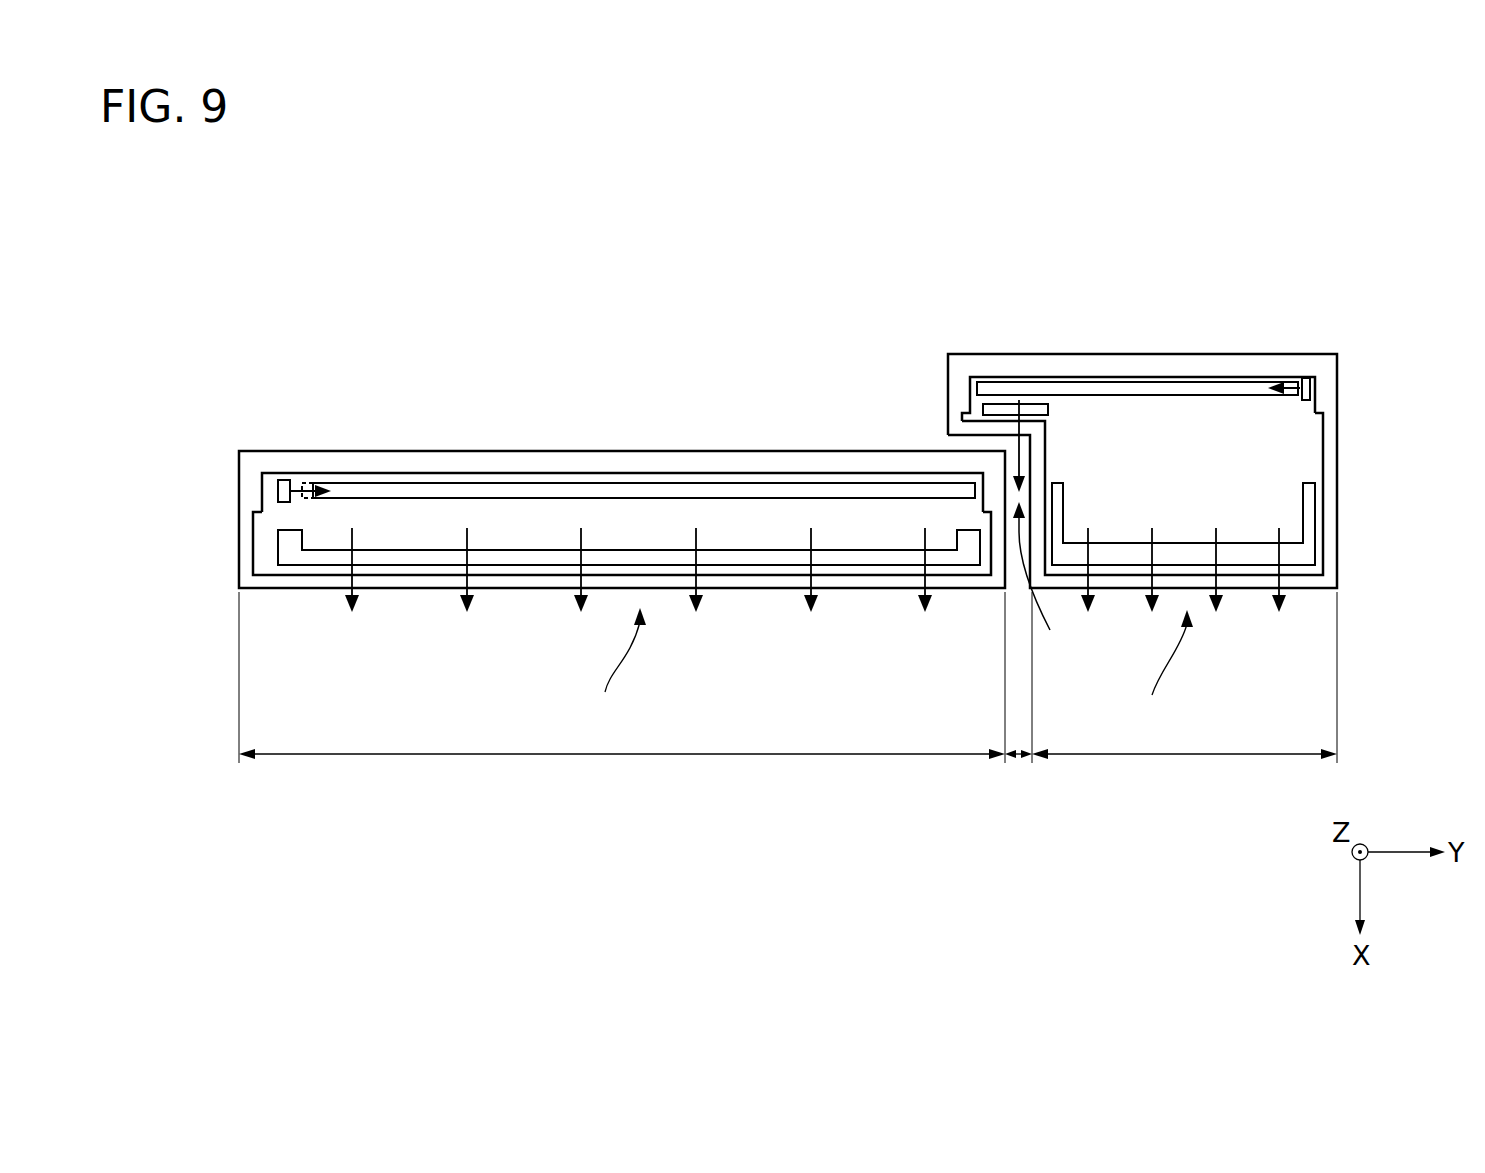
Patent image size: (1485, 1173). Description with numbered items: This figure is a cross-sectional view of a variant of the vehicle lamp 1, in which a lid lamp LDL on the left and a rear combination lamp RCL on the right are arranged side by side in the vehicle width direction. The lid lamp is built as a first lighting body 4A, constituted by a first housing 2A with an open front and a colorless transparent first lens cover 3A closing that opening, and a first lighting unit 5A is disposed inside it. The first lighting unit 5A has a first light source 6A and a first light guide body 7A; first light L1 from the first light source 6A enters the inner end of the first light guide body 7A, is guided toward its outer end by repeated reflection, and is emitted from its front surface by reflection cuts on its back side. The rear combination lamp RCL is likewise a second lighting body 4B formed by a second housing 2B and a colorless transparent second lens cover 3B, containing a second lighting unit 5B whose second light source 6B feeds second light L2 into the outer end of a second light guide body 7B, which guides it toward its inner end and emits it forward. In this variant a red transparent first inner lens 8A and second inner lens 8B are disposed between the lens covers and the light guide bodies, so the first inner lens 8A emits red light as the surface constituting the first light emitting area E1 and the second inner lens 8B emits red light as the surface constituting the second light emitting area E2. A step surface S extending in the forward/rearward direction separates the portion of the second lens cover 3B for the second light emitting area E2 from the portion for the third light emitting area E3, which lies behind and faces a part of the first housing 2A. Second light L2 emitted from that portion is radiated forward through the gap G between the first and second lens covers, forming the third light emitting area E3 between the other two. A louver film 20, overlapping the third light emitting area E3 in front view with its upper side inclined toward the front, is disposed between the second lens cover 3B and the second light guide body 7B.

The vehicle lamp 1 is at (347, 181).
The first housing 2A is at (250, 485).
The first lens cover 3A is at (245, 538).
The first lighting body 4A is at (180, 468).
The first lighting unit 5A is at (425, 370).
The first light source 6A is at (285, 483).
The first light guide body 7A is at (385, 492).
The first inner lens 8A is at (750, 555).
The second housing 2B is at (1338, 390).
The second lens cover 3B is at (1338, 463).
The second lighting body 4B is at (1412, 380).
The second lighting unit 5B is at (1313, 290).
The second light source 6B is at (1307, 387).
The second light guide body 7B is at (1173, 388).
The second inner lens 8B is at (1187, 555).
The louver film 20 is at (1002, 408).
The step surface S is at (1030, 452).
The gap G is at (1041, 582).
The first light L1 is at (300, 490).
The second light L2 is at (1013, 480).
The light distribution region LDL is at (613, 668).
The rear combination lamp RCL is at (1160, 670).
The first light emitting area E1 is at (623, 757).
The second light emitting area E2 is at (1182, 757).
The third light emitting area E3 is at (1017, 763).